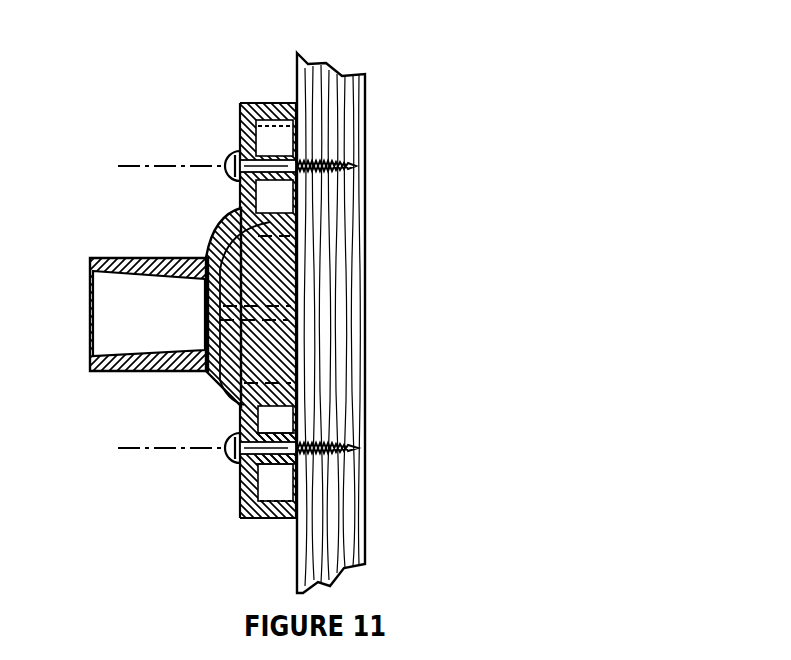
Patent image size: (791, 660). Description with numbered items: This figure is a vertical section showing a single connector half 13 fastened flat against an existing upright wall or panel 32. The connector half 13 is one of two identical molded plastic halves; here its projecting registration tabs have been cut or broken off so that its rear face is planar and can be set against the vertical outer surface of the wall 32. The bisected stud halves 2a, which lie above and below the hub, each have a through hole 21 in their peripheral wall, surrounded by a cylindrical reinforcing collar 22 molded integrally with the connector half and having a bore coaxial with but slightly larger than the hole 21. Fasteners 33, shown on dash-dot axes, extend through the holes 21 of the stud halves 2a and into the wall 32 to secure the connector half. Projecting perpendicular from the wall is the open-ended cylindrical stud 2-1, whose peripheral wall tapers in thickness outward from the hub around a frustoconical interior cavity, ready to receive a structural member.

The stud halves 2a is at (233, 125).
The studs 2-1 is at (108, 250).
The connector half 13 is at (215, 372).
The through hole 21 is at (235, 460).
The reinforcing collar 22 is at (263, 467).
The wall or panel 32 is at (332, 308).
The fastener 33 is at (218, 447).